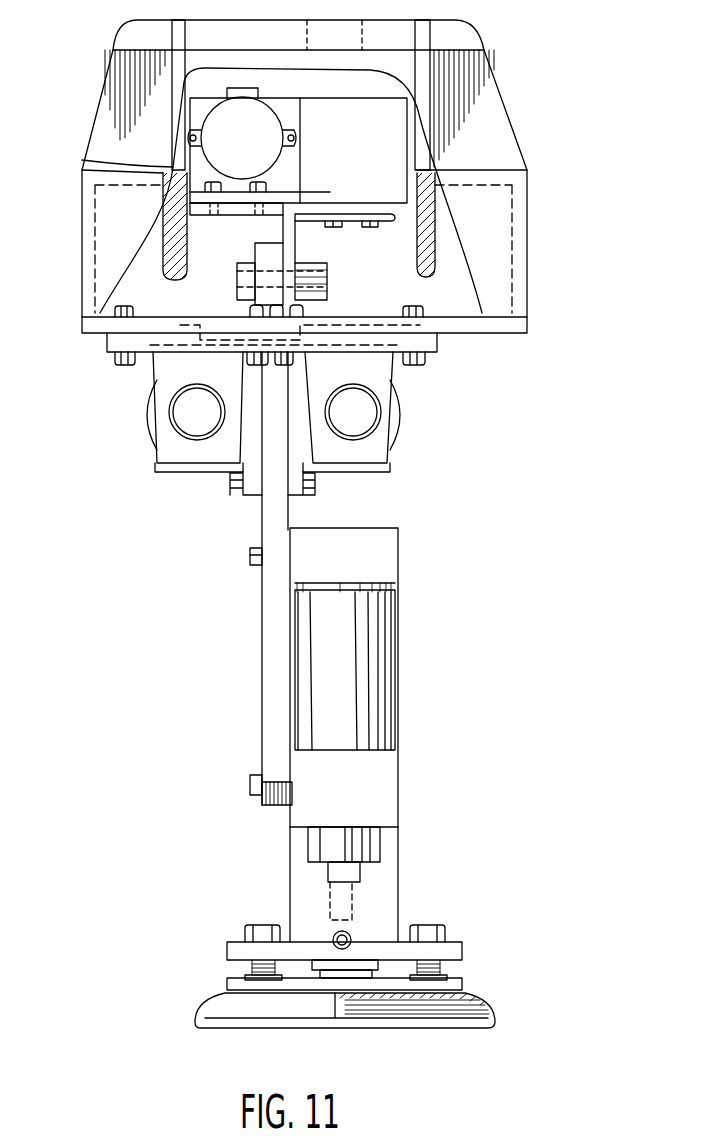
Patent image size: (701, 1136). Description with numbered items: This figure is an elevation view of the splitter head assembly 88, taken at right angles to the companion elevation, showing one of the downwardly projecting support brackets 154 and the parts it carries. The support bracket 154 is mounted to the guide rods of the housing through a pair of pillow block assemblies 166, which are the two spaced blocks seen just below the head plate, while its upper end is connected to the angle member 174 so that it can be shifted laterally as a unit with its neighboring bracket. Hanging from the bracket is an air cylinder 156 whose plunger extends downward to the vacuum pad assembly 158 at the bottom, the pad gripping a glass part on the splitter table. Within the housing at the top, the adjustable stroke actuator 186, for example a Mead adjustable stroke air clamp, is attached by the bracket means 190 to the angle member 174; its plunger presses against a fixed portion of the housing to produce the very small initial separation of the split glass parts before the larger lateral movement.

The splitter head assembly 88 is at (532, 114).
The support bracket 154 is at (268, 608).
The air cylinder 156 is at (365, 665).
The vacuum pad assembly 158 is at (455, 946).
The pillow block assemblies 166 is at (193, 472).
The angle member 174 is at (296, 222).
The adjustable stroke actuator 186 is at (259, 128).
The bracket means 190 is at (122, 162).